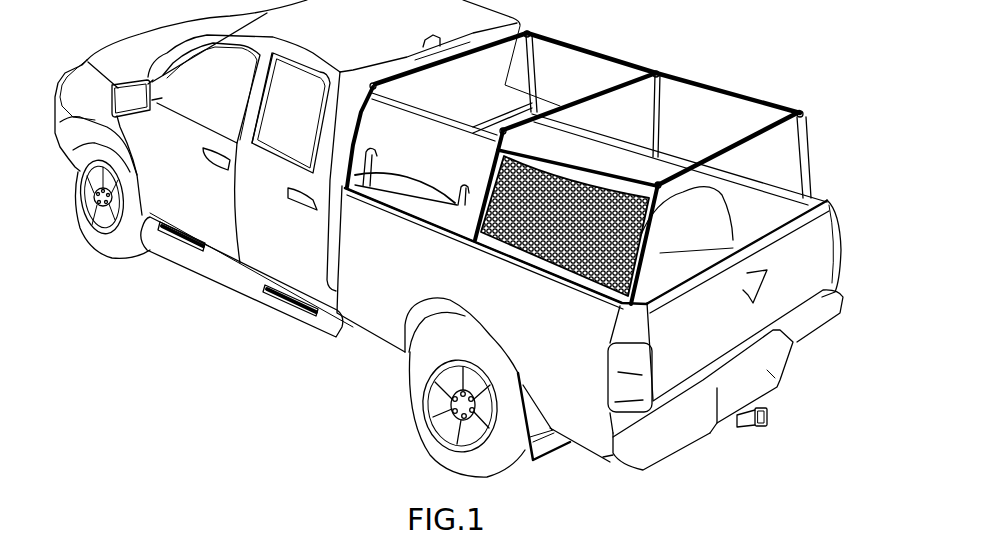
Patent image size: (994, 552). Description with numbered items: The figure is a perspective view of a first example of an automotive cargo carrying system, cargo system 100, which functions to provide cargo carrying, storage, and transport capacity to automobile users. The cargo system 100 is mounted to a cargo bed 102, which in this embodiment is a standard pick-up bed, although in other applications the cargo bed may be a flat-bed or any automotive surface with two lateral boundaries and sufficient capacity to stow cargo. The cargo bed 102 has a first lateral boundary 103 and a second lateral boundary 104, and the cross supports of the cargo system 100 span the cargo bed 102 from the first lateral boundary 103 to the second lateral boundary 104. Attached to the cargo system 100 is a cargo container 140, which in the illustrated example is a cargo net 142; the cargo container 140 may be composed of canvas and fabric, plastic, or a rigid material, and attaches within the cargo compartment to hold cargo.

The cargo system 100 is at (579, 160).
The cargo bed 102 is at (373, 323).
The first lateral boundary 103 is at (648, 304).
The second lateral boundary 104 is at (828, 200).
The cargo container 140 is at (407, 192).
The cargo net 142 is at (543, 240).